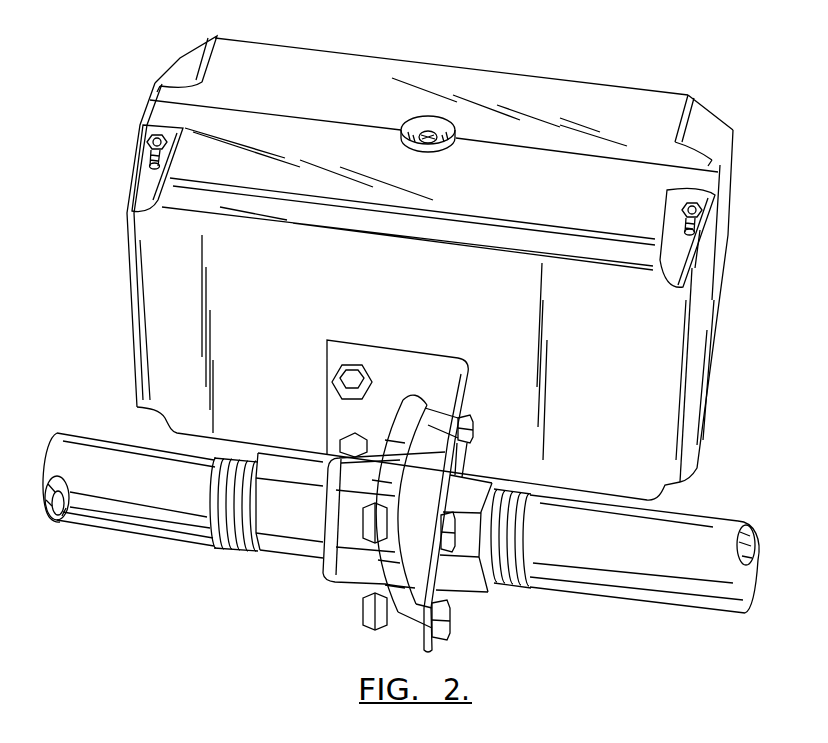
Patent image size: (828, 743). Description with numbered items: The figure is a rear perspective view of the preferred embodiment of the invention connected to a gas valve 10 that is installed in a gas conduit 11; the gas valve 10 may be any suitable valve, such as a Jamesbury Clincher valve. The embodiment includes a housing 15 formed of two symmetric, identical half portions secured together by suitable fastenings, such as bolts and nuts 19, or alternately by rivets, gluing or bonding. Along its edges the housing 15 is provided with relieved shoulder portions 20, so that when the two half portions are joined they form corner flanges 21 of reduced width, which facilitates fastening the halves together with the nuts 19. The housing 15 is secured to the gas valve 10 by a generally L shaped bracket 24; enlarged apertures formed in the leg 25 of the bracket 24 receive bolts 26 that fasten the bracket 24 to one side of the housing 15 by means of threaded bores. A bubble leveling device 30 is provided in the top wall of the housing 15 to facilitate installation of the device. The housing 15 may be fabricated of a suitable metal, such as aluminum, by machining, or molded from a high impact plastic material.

The gas valve 10 is at (333, 587).
The gas conduit 11 is at (122, 515).
The housing 15 is at (118, 94).
The nuts 19 is at (147, 141).
The relieved shoulder portions 20 is at (192, 62).
The corner flanges 21 is at (158, 88).
The L shaped bracket 24 is at (445, 590).
The leg 25 is at (430, 372).
The bolts 26 is at (348, 440).
The bubble leveling device 30 is at (430, 135).